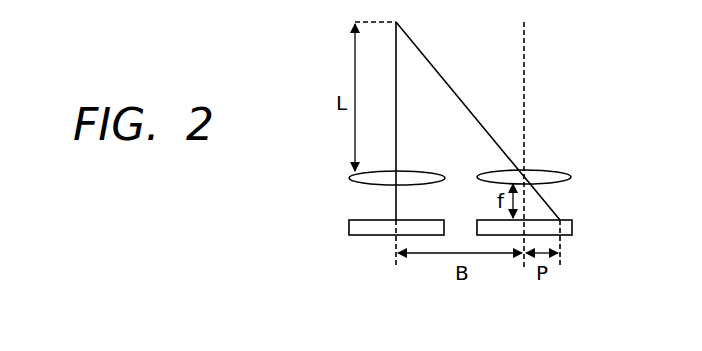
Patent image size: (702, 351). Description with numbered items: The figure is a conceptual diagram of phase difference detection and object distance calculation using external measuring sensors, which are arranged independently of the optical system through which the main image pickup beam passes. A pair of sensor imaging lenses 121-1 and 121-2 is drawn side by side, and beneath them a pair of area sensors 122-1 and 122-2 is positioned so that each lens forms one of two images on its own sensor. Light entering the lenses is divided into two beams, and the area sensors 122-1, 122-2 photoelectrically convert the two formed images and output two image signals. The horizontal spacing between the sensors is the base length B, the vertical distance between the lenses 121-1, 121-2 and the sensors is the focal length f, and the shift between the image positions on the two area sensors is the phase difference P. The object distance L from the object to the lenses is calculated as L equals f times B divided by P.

The lens 121-1 is at (435, 150).
The lens 121-2 is at (572, 152).
The area sensor 122-1 is at (349, 227).
The area sensor 122-2 is at (572, 227).